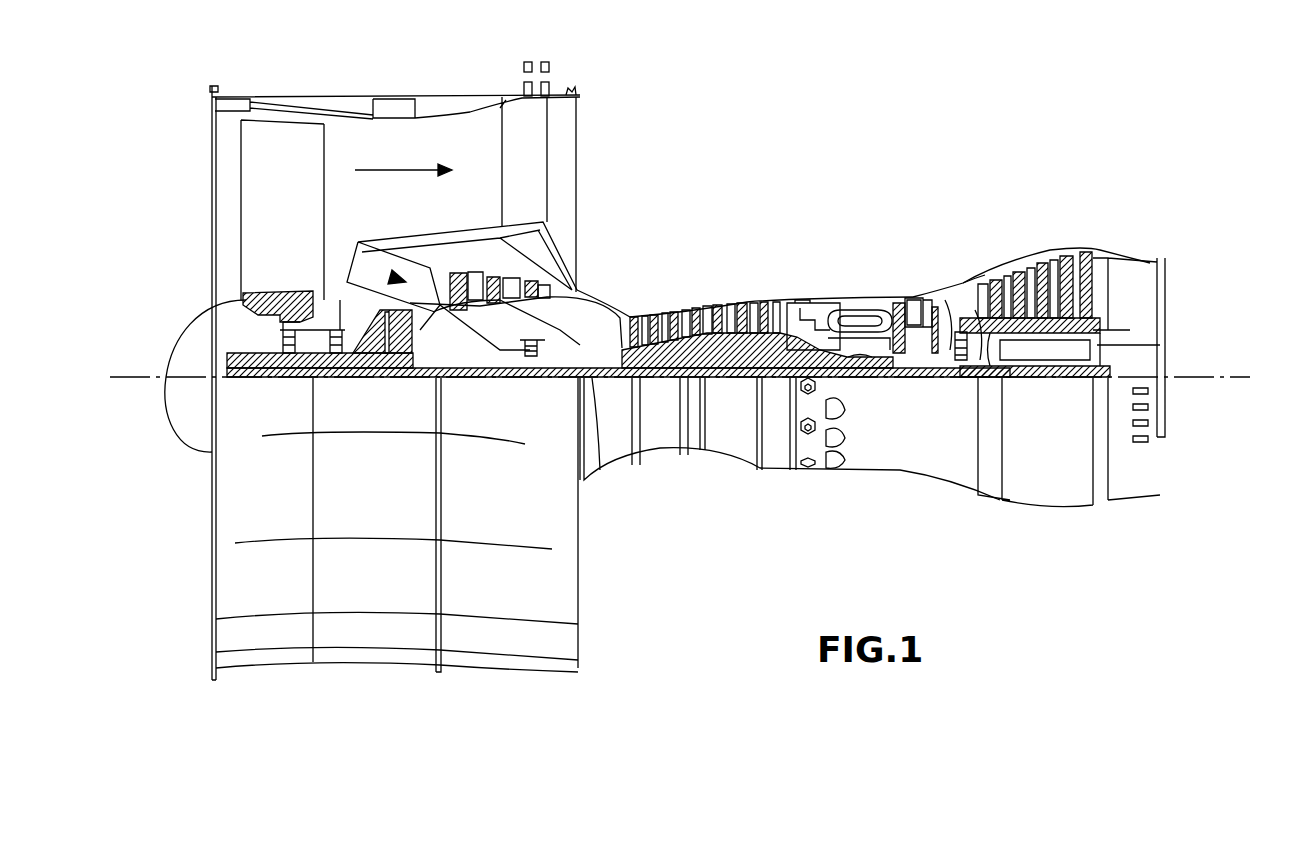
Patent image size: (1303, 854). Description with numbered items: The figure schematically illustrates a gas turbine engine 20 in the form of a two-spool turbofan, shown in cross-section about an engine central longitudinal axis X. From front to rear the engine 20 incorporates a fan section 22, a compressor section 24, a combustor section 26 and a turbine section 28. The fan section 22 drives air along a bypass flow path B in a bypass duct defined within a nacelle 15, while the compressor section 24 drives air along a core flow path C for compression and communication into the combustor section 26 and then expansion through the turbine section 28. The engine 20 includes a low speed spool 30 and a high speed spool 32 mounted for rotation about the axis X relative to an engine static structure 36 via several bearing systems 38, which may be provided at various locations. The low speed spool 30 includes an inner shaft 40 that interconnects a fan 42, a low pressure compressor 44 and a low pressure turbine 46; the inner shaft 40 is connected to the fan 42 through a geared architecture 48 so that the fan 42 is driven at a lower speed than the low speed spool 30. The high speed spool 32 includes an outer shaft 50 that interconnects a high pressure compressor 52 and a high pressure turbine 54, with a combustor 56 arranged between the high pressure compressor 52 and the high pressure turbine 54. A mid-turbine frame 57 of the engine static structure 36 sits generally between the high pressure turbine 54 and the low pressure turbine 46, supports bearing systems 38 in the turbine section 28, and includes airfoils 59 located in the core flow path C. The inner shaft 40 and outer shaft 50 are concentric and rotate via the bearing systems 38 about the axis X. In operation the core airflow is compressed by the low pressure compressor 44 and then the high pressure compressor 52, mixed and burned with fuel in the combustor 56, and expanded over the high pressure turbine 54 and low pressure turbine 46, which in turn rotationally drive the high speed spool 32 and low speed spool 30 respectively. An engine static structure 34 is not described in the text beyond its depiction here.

The nacelle 15 is at (408, 97).
The gas turbine engine 20 is at (853, 143).
The fan section 22 is at (420, 68).
The compressor section 24 is at (432, 214).
The combustor section 26 is at (882, 214).
The turbine section 28 is at (1107, 214).
The low speed spool 30 is at (733, 381).
The high speed spool 32 is at (775, 310).
The engine static structure 34 is at (1075, 345).
The engine static structure 36 is at (771, 463).
The bearing systems 38 is at (300, 380).
The inner shaft 40 is at (598, 390).
The fan 42 is at (296, 226).
The low pressure compressor 44 is at (510, 282).
The low pressure turbine 46 is at (1040, 285).
The geared architecture 48 is at (400, 372).
The outer shaft 50 is at (856, 372).
The high pressure compressor 52 is at (712, 333).
The high pressure turbine 54 is at (906, 300).
The combustor 56 is at (849, 318).
The mid-turbine frame 57 is at (955, 290).
The airfoils 59 is at (966, 332).
The bypass flow path B is at (400, 170).
The core flow path C is at (396, 279).
The engine central longitudinal axis X is at (1247, 377).